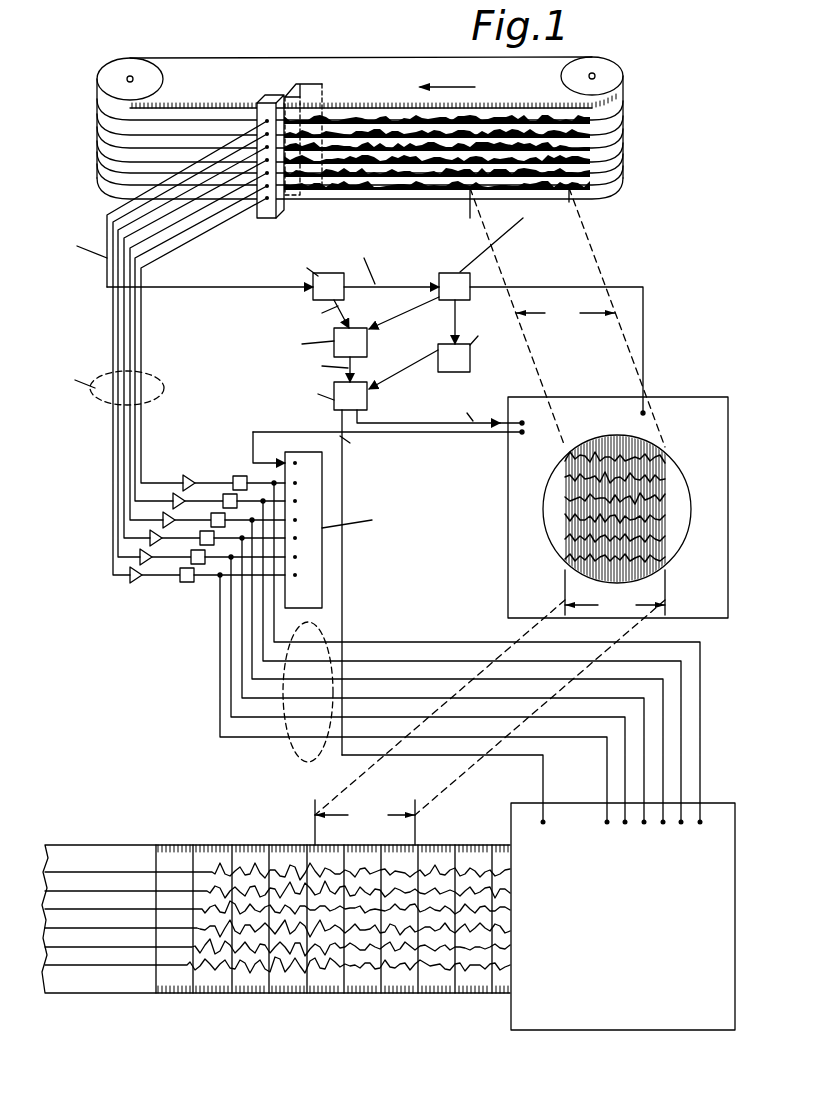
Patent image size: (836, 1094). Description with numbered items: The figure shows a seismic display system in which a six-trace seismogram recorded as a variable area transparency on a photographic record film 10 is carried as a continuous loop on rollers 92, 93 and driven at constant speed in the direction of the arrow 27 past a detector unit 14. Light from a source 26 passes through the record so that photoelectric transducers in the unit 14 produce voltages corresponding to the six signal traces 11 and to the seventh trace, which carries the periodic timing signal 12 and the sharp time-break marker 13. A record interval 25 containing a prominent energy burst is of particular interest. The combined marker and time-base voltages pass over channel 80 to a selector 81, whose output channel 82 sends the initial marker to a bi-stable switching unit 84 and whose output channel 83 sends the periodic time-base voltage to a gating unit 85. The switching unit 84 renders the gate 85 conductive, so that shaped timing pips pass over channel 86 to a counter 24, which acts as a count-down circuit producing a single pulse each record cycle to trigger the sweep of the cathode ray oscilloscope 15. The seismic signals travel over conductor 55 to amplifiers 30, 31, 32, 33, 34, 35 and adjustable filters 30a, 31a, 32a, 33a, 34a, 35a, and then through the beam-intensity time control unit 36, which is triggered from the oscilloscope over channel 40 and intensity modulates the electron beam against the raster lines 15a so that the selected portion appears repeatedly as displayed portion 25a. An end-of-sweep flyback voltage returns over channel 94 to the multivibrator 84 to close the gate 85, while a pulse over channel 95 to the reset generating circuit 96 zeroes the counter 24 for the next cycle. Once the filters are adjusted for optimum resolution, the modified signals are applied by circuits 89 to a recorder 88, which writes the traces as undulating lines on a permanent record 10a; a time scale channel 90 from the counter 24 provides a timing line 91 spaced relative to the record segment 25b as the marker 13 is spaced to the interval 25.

The photographic record film 10 is at (198, 57).
The signal traces 11 is at (105, 120).
The timing signal 12 is at (230, 102).
The time-break pulse 13 is at (192, 107).
The detector unit 14 is at (270, 100).
The light source 26 is at (300, 90).
The arrow 27 is at (446, 76).
The roller 92 is at (115, 79).
The roller 93 is at (612, 80).
The channel 80 is at (188, 290).
The selector 81 is at (304, 278).
The output channel 82 is at (397, 285).
The output channel 83 is at (346, 314).
The switching unit 84 is at (494, 267).
The gating unit 85 is at (314, 342).
The gating unit output channel 86 is at (352, 372).
The counter 24 is at (317, 568).
The channel 95 is at (458, 323).
The reset generating circuit 96 is at (438, 357).
The record interval 25 is at (567, 317).
The channel 94 is at (644, 326).
The cathode ray oscilloscope 15 is at (675, 396).
The raster lines 15a is at (583, 455).
The displayed record portion 25a is at (615, 592).
The conductor 55 is at (140, 430).
The amplifier 30 is at (183, 478).
The filter 30a is at (243, 476).
The amplifier 31 is at (175, 500).
The filter 31a is at (230, 494).
The amplifier 32 is at (163, 520).
The filter 32a is at (216, 513).
The amplifier 33 is at (150, 539).
The filter 33a is at (213, 545).
The amplifier 34 is at (138, 560).
The filter 34a is at (200, 564).
The amplifier 35 is at (132, 583).
The filter 35a is at (182, 583).
The beam-intensity time control unit 36 is at (322, 473).
The channel 40 is at (293, 432).
The circuits 89 is at (292, 745).
The time scale channel 90 is at (486, 707).
The record segment 25b is at (365, 822).
The permanent record 10a is at (113, 845).
The timing line 91 is at (156, 973).
The recorder 88 is at (623, 916).